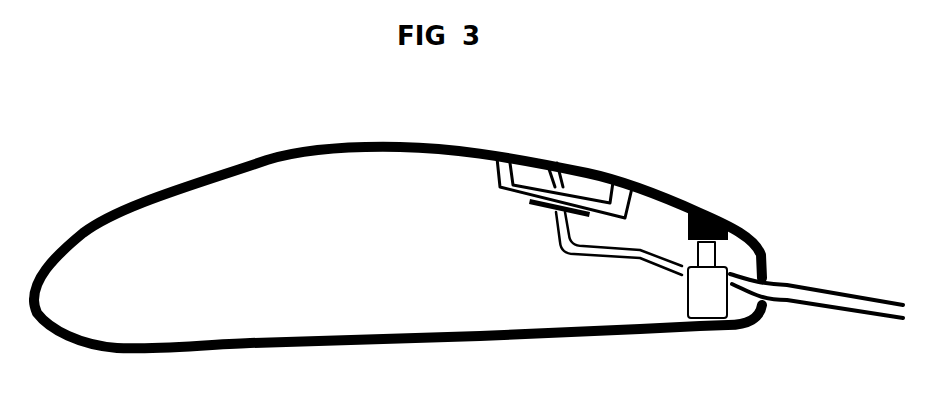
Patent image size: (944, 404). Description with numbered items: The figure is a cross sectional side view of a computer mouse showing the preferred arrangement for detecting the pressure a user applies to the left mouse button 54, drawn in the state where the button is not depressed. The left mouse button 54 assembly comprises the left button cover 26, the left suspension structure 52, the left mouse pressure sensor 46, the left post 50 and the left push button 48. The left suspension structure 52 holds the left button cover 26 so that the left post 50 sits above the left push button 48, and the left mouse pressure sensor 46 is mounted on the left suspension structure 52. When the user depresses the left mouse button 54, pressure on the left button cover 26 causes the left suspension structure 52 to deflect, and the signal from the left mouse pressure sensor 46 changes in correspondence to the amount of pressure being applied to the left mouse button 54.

The left button cover 26 is at (663, 188).
The left mouse pressure sensor 46 is at (548, 210).
The left push button 48 is at (707, 302).
The left post 50 is at (688, 226).
The left suspension structure 52 is at (494, 177).
The left mouse button 54 is at (788, 228).